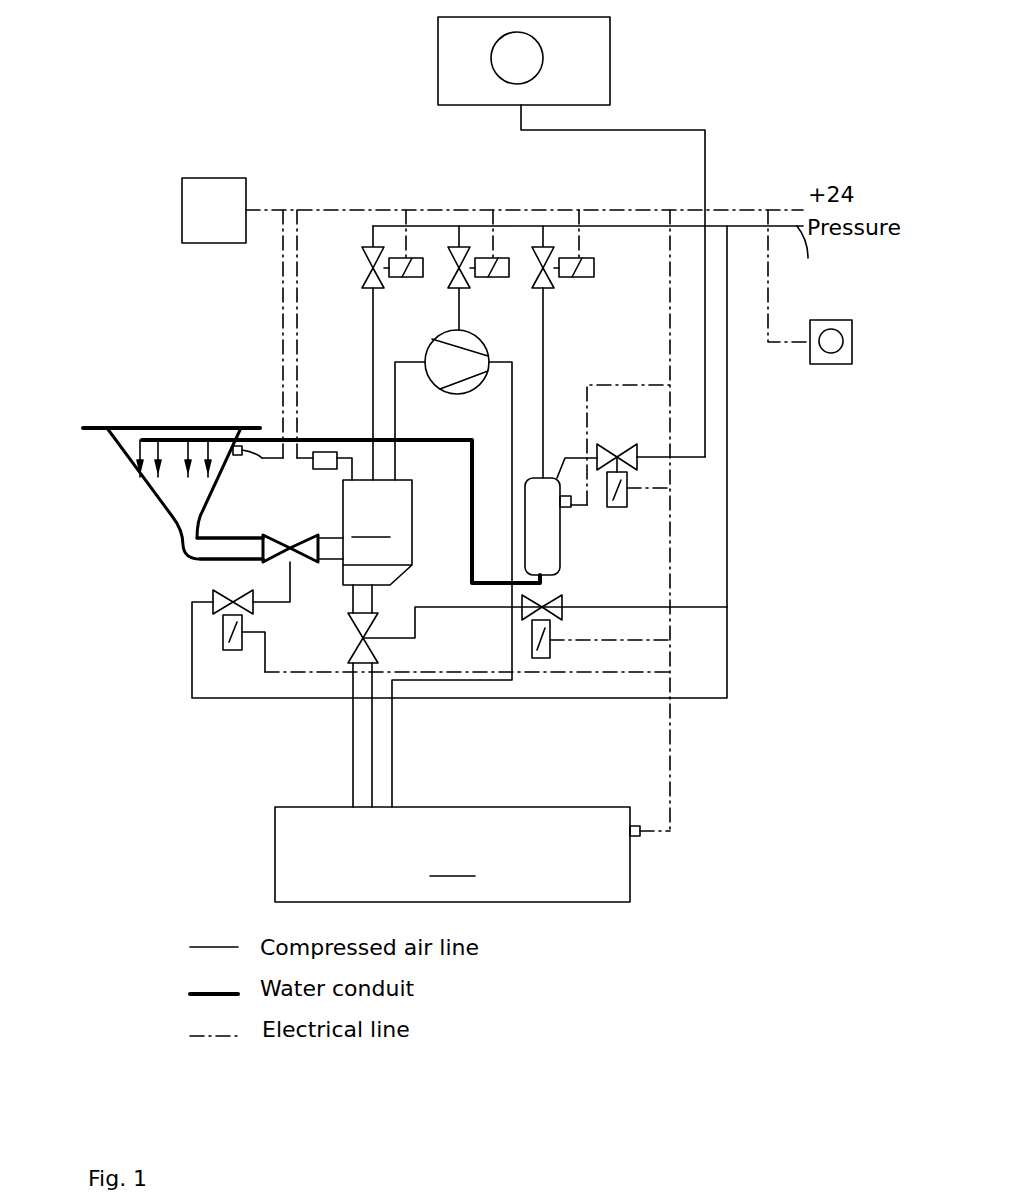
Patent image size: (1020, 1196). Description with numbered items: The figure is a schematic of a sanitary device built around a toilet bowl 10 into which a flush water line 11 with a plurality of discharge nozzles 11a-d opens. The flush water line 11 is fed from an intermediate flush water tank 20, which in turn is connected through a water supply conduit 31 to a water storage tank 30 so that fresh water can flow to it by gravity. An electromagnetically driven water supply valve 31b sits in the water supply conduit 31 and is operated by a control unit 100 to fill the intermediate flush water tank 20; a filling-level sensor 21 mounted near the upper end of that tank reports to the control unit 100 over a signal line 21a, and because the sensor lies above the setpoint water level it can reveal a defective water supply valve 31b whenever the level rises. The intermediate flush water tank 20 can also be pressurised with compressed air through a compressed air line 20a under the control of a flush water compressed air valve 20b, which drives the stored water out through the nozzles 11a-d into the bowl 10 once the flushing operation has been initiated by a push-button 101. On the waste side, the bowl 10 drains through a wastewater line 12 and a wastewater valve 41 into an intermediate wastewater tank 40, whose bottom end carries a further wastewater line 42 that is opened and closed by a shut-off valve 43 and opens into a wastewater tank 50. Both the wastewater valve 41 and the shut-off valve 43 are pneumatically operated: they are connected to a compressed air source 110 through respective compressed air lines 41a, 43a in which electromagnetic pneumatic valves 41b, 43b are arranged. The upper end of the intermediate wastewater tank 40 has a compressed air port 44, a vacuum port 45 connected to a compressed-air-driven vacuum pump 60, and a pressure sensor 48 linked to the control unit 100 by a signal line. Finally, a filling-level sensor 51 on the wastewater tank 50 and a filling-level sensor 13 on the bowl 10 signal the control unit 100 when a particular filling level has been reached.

The control unit 100 is at (218, 195).
The water storage tank 30 is at (593, 73).
The flush water compressed air valve 20b is at (553, 283).
The vacuum pump 60 is at (452, 363).
The compressed air port 44 is at (372, 430).
The vacuum port 45 is at (395, 463).
The compressed air line 20a is at (543, 393).
The toilet bowl 10 is at (185, 493).
The flush water line 11 is at (308, 438).
The discharge nozzles 11a-d is at (208, 465).
The pressure sensor 48 is at (320, 455).
The filling-level sensor 13 is at (238, 458).
The wastewater line 12 is at (223, 547).
The wastewater valve 41 is at (270, 550).
The electromagnetic pneumatic valve 41b is at (218, 615).
The compressed air line 41a is at (210, 700).
The intermediate wastewater tank 40 is at (377, 532).
The wastewater line 42 is at (358, 598).
The shut-off valve 43 is at (362, 657).
The compressed air line 43a is at (468, 610).
The electromagnetic pneumatic valve 43b is at (557, 617).
The intermediate flush water tank 20 is at (543, 548).
The filling-level sensor 21 is at (572, 510).
The signal line 21a is at (587, 385).
The water supply valve 31b is at (622, 453).
The water supply conduit 31 is at (705, 418).
The wastewater tank 50 is at (452, 854).
The filling-level sensor 51 is at (640, 838).
The compressed air source 110 is at (840, 322).
The push-button 101 is at (827, 348).